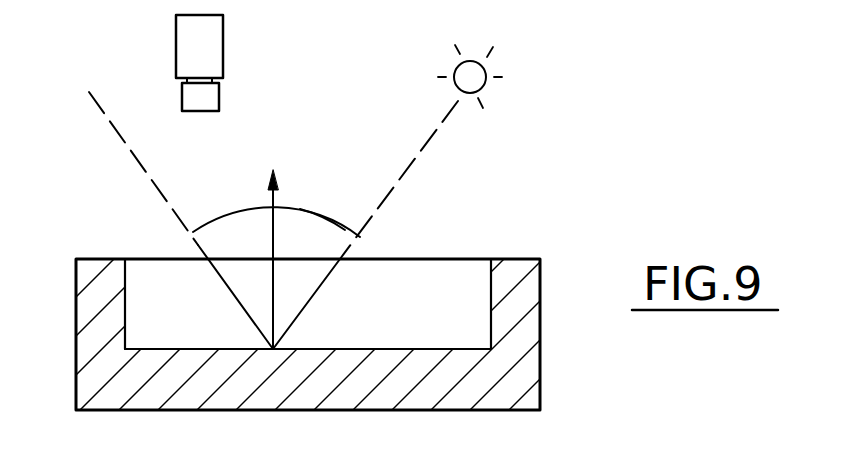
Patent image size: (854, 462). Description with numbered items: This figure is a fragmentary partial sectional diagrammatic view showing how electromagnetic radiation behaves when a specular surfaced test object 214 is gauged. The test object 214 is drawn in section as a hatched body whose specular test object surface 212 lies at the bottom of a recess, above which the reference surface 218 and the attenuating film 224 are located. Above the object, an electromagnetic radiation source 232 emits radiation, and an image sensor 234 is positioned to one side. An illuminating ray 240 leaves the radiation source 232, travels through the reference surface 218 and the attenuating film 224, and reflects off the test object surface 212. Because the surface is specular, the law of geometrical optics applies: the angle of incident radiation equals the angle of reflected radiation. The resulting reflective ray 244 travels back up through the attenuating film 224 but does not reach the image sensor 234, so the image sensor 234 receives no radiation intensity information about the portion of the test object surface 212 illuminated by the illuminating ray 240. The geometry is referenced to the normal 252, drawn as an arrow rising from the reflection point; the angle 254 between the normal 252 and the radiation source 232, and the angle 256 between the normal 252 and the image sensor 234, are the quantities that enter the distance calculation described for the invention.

The test object surface 212 is at (395, 351).
The test object 214 is at (538, 383).
The reference surface 218 is at (147, 259).
The attenuating film 224 is at (438, 260).
The electromagnetic radiation source 232 is at (486, 68).
The image sensor 234 is at (176, 40).
The illuminating ray 240 is at (430, 143).
The reflective ray 244 is at (119, 136).
The normal 252 is at (275, 203).
The angle 254 is at (325, 213).
The angle 256 is at (240, 207).